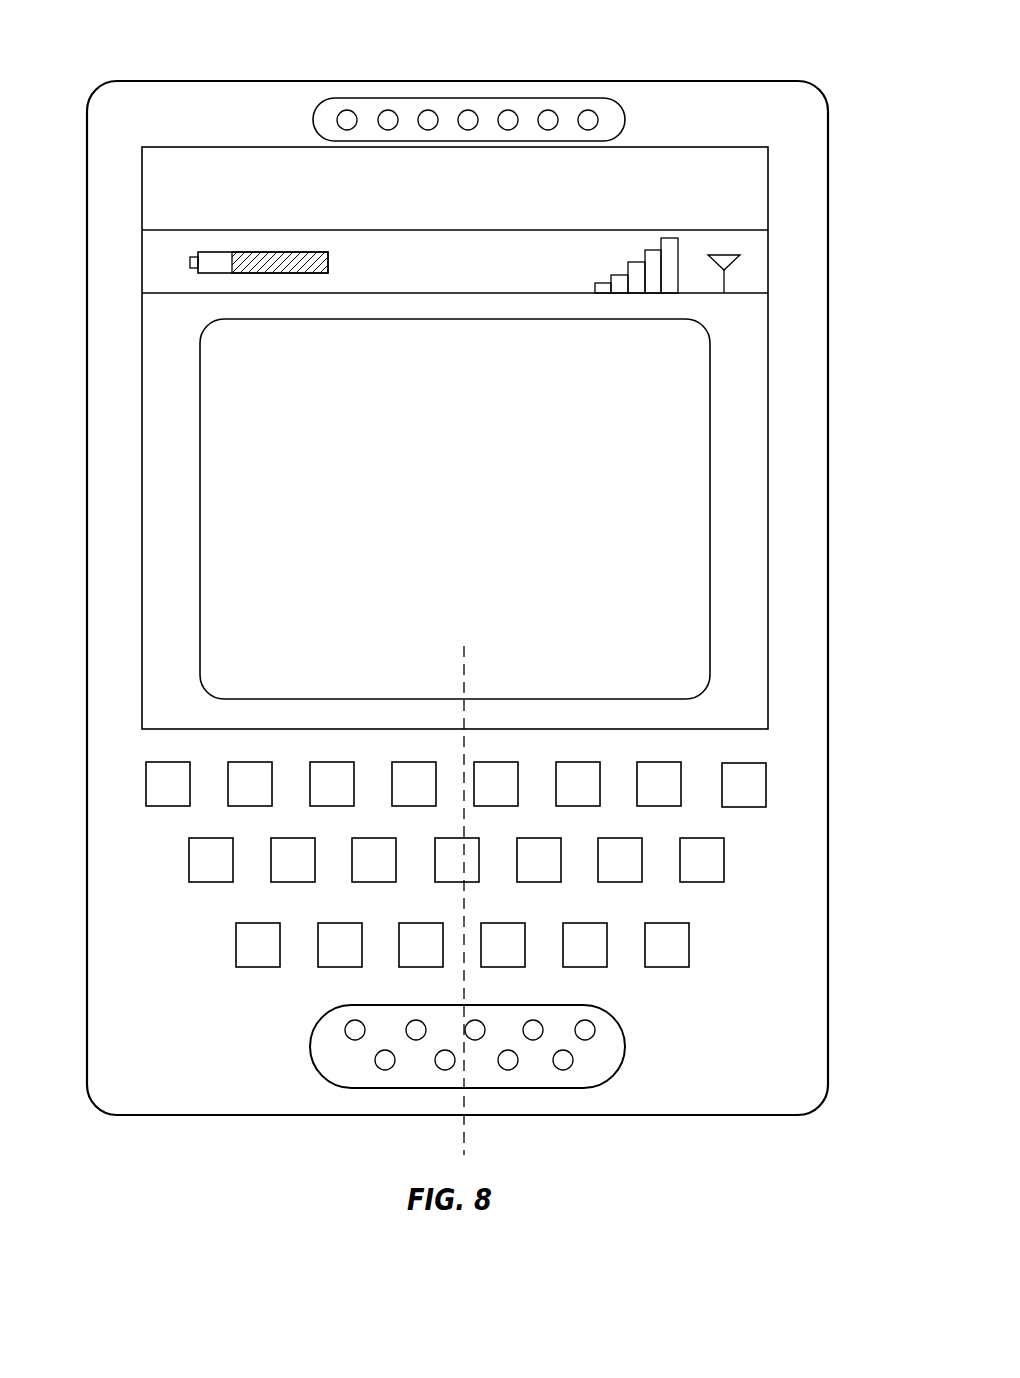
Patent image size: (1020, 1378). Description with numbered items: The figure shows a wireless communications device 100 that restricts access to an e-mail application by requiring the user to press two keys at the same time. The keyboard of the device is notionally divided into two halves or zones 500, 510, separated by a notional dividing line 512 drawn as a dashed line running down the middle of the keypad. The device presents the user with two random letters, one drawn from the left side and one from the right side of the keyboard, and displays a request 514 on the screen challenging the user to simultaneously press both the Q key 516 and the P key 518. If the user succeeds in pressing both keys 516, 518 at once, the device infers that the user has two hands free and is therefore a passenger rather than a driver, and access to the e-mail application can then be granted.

The wireless communications device 100 is at (668, 83).
The left half of the keyboard 500 is at (459, 973).
The right half of the keyboard 510 is at (658, 1049).
The notional dividing line 512 is at (466, 1122).
The request 514 is at (431, 457).
The Q key 516 is at (146, 791).
The P key 518 is at (766, 796).